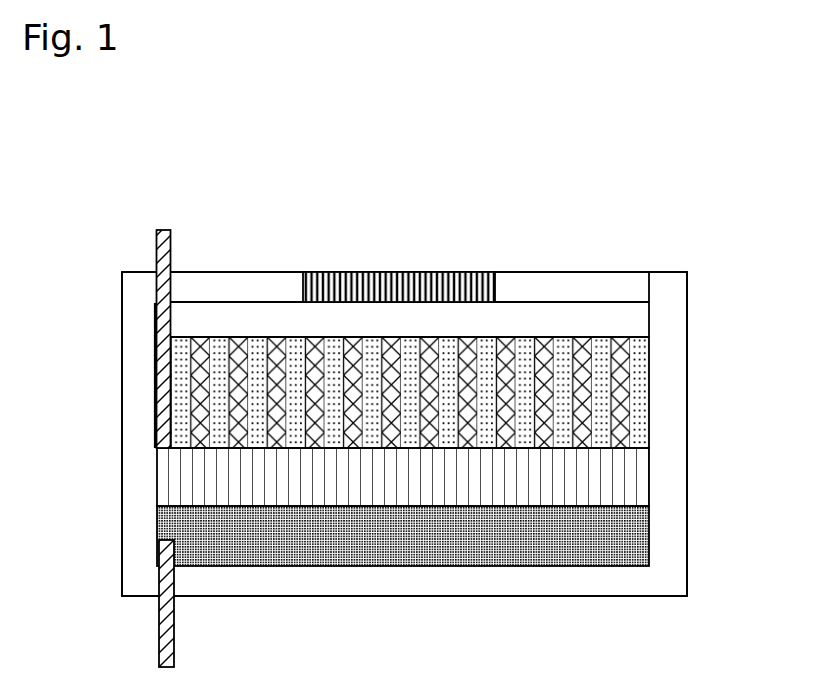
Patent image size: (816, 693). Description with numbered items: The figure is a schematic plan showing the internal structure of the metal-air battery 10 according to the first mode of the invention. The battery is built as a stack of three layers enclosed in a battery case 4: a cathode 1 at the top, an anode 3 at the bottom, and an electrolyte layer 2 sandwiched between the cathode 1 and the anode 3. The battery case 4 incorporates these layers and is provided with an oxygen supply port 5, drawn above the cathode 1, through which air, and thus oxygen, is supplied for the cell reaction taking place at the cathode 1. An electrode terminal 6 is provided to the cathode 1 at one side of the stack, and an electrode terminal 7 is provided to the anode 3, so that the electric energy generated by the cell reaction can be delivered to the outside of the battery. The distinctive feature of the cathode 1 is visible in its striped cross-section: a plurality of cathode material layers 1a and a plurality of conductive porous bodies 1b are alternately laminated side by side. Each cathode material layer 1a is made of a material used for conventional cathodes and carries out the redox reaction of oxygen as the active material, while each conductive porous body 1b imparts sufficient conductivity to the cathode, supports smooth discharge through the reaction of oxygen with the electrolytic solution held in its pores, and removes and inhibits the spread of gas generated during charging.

The metal-air battery 10 is at (427, 161).
The cathode 1 is at (650, 395).
The cathode material layer 1a is at (523, 339).
The conductive porous body 1b is at (193, 341).
The electrolyte layer 2 is at (650, 476).
The anode 3 is at (650, 536).
The battery case 4 is at (673, 588).
The oxygen supply port 5 is at (418, 272).
The electrode terminal 6 is at (156, 231).
The electrode terminal 7 is at (168, 637).